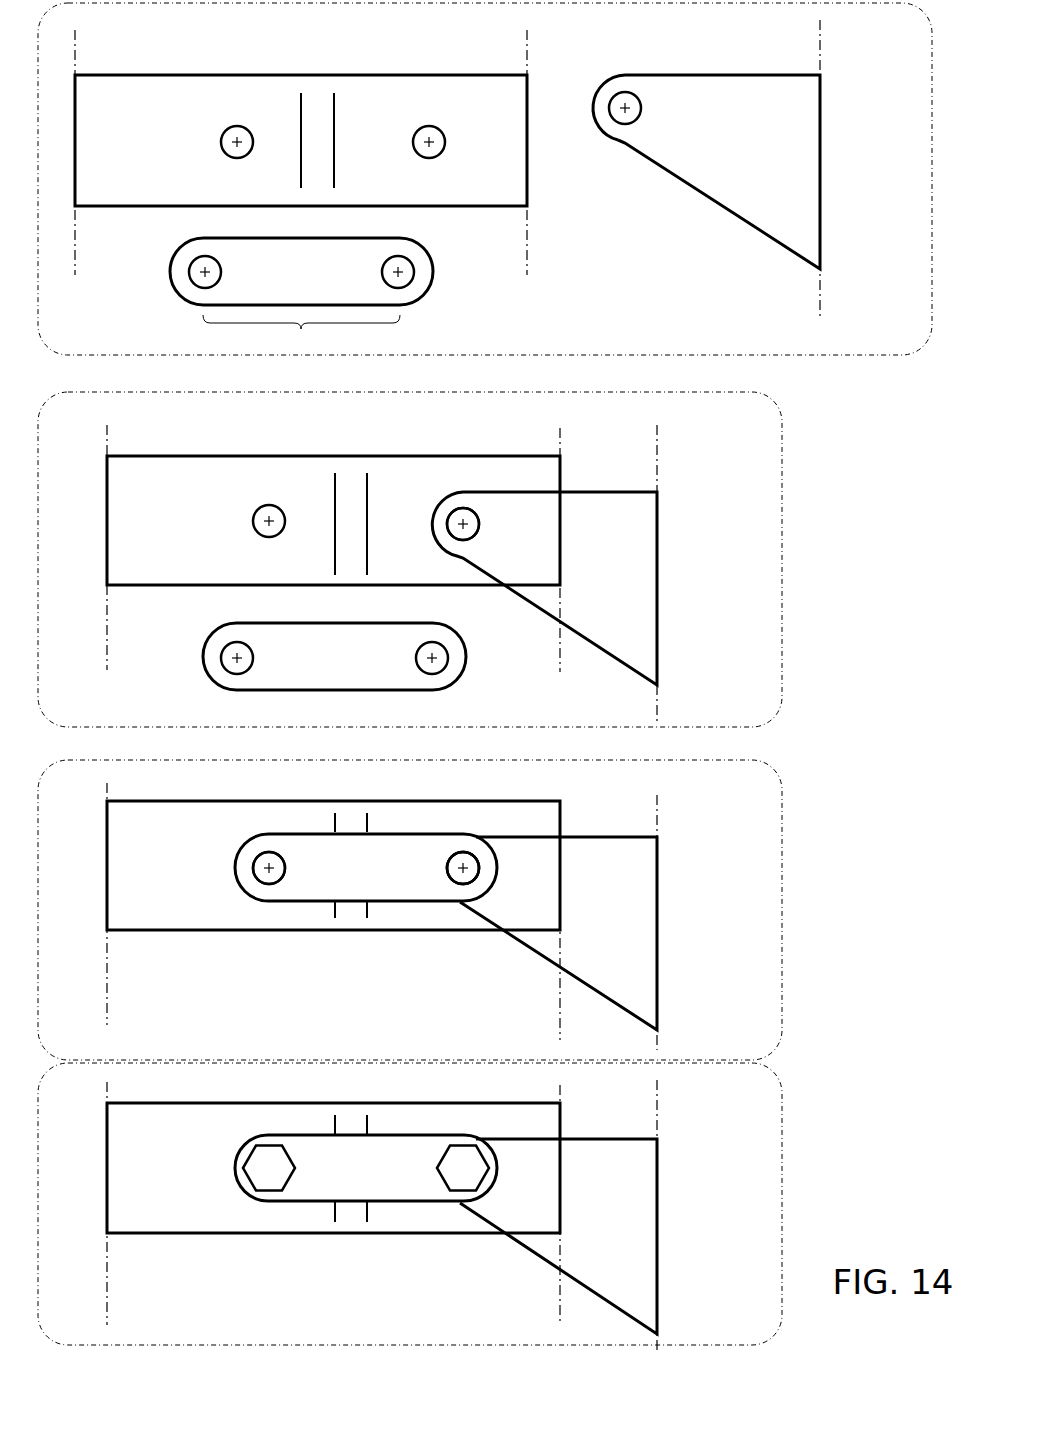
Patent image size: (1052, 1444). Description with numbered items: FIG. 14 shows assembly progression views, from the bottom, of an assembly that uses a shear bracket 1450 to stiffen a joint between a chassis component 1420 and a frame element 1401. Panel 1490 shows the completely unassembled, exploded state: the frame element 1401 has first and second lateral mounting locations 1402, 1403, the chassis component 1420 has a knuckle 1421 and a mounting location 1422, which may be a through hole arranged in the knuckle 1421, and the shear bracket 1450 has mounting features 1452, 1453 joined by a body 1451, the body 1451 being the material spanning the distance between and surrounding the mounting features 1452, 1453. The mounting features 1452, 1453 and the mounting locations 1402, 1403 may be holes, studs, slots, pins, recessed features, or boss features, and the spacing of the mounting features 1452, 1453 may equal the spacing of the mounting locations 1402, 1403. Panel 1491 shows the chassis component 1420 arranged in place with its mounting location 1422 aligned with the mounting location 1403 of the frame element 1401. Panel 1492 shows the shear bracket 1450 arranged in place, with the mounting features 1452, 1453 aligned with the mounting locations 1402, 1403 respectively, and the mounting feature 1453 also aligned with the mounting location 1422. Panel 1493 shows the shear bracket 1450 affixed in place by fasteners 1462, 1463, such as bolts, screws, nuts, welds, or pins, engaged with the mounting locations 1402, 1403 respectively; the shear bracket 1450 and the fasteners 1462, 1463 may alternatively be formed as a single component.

The frame element 1401 is at (103, 127).
The mounting location 1402 is at (238, 125).
The mounting location 1403 is at (429, 125).
The chassis component 1420 is at (718, 142).
The knuckle 1421 is at (579, 106).
The mounting location 1422 is at (625, 91).
The shear bracket 1450 is at (274, 279).
The body 1451 is at (301, 336).
The mounting feature 1452 is at (194, 284).
The mounting feature 1453 is at (409, 284).
The fastener 1462 is at (277, 1201).
The fastener 1463 is at (470, 1203).
The panel 1490 is at (840, 52).
The panel 1491 is at (690, 427).
The panel 1492 is at (670, 803).
The panel 1493 is at (690, 1130).